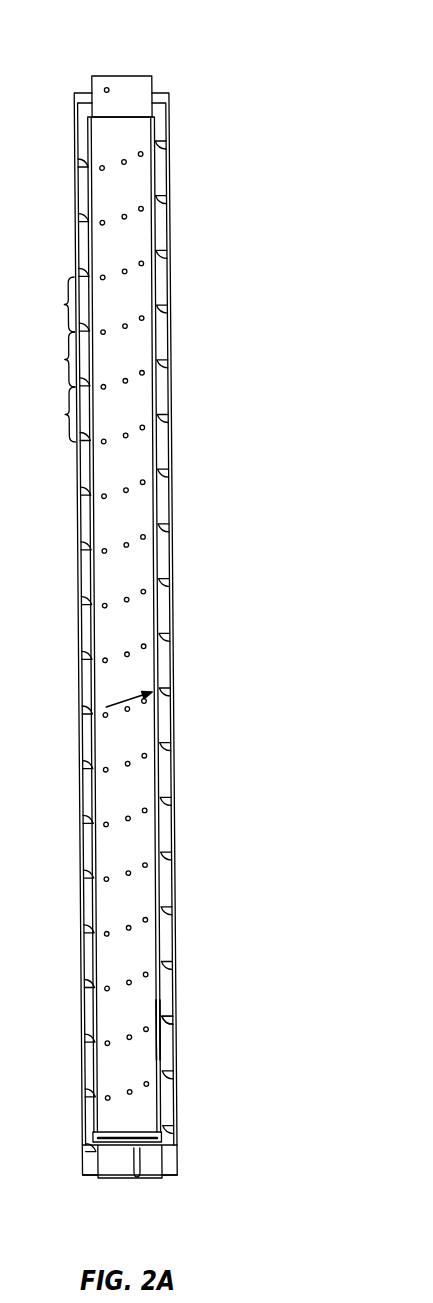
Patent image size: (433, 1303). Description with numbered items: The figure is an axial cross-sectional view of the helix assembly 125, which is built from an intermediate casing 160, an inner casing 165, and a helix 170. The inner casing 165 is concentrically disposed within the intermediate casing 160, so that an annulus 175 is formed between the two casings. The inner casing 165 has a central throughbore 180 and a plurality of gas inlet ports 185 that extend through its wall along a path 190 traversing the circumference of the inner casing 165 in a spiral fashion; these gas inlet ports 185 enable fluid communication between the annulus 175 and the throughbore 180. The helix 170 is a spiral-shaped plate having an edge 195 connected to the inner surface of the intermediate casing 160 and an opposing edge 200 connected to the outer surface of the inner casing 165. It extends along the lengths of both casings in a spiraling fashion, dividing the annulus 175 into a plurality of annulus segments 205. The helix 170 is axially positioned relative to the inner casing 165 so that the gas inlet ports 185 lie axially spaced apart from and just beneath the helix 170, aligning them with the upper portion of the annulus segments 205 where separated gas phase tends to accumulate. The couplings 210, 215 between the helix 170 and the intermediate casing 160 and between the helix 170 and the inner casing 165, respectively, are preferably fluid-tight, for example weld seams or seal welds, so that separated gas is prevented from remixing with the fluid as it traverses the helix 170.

The helix assembly 125 is at (174, 66).
The intermediate casing 160 is at (171, 332).
The inner casing 165 is at (170, 498).
The helix 170 is at (165, 575).
The annulus 175 is at (172, 871).
The throughbore 180 is at (150, 1020).
The gas inlet ports 185 is at (145, 807).
The path 190 is at (117, 703).
The edge 195 is at (183, 1008).
The coupling 210 is at (167, 1020).
The opposing edge 200 is at (173, 1033).
The coupling 215 is at (158, 1030).
The annulus segments 205 is at (44, 359).